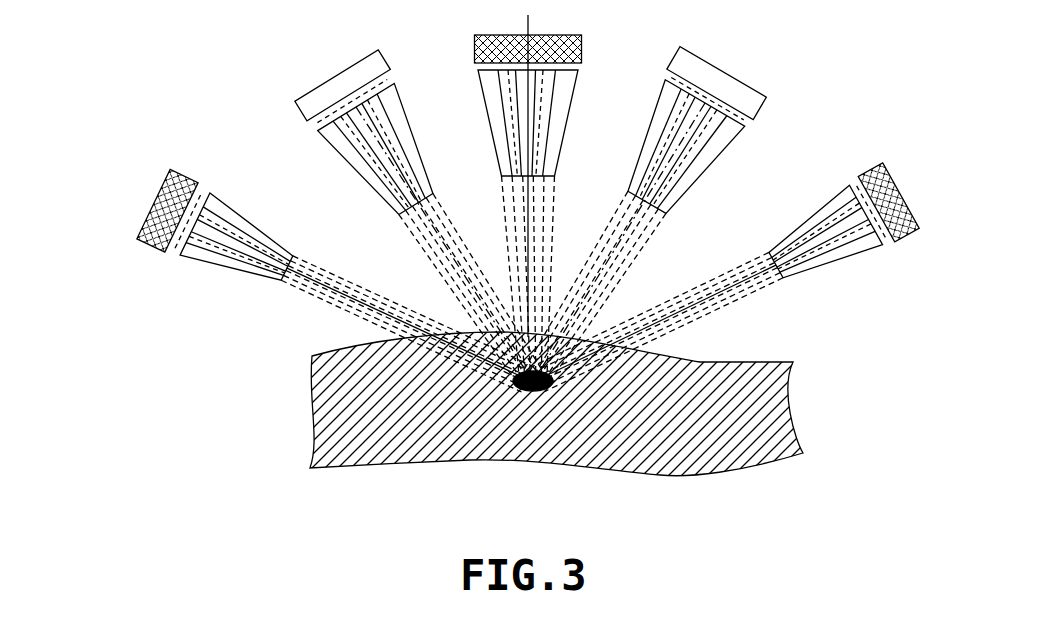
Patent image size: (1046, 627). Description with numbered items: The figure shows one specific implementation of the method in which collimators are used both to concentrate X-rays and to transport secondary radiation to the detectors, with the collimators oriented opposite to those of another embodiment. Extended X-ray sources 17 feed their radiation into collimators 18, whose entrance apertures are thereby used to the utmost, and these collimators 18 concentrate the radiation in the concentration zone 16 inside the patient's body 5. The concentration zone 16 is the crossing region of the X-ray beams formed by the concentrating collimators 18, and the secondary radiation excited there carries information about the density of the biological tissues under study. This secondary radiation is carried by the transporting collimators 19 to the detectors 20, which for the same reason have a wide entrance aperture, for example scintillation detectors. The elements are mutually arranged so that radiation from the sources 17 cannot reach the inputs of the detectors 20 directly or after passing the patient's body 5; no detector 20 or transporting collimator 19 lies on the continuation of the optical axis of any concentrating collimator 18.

The patient's body 5 is at (330, 383).
The concentration zone 16 is at (525, 388).
The extended X-ray source 17 is at (147, 243).
The collimator concentrating radiation 18 is at (217, 260).
The collimator transporting secondary radiation 19 is at (327, 140).
The detector with wide entrance aperture 20 is at (298, 98).